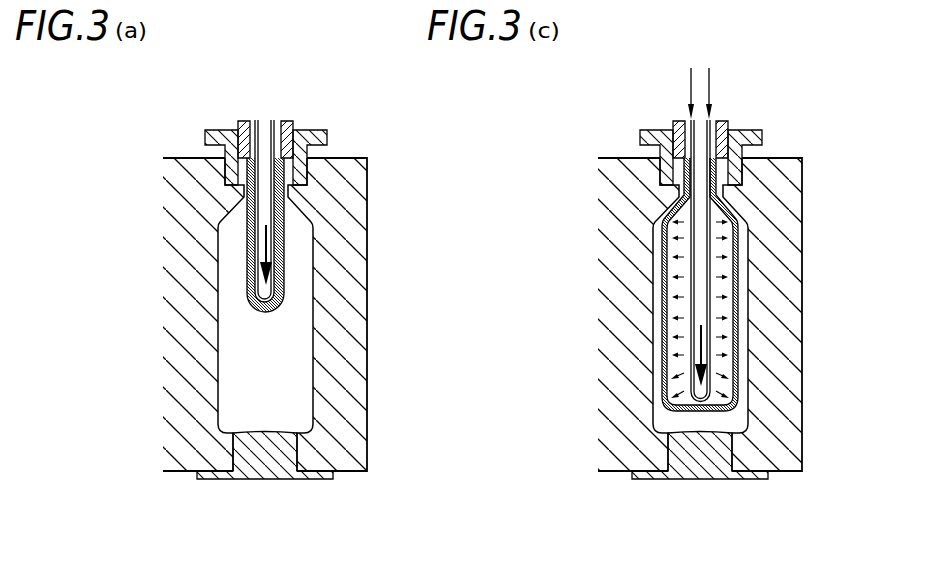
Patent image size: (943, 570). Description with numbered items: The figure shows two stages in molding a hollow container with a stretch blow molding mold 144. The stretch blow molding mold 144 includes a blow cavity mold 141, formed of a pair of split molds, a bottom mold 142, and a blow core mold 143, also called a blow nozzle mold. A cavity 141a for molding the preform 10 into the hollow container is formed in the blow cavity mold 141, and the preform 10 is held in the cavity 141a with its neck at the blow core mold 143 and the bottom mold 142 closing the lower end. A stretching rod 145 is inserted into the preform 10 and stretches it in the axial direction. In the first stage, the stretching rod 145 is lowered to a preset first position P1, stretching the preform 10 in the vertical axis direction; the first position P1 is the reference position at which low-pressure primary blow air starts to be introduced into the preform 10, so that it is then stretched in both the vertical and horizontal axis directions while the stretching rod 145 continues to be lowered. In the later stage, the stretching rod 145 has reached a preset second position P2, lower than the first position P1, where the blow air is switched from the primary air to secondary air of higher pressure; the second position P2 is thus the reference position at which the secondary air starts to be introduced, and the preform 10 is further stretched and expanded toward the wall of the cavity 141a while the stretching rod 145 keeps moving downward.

In FIG. 3A, the preform 10 is at (247, 236).
In FIG. 3C, the preform 10 is at (662, 236).
In FIG. 3A, the blow cavity mold 141 is at (348, 222).
In FIG. 3C, the blow cavity mold 141 is at (783, 222).
In FIG. 3A, the cavity 141a is at (277, 406).
In FIG. 3C, the cavity 141a is at (740, 352).
In FIG. 3A, the bottom mold 142 is at (270, 465).
In FIG. 3C, the bottom mold 142 is at (705, 465).
In FIG. 3A, the blow core mold 143 is at (287, 120).
In FIG. 3C, the blow core mold 143 is at (718, 120).
In FIG. 3A, the stretch blow molding mold 144 is at (416, 114).
In FIG. 3C, the stretch blow molding mold 144 is at (850, 114).
In FIG. 3A, the stretching rod 145 is at (274, 238).
In FIG. 3C, the stretching rod 145 is at (705, 237).
In FIG. 3A, the first position P1 is at (290, 306).
In FIG. 3C, the second position P2 is at (715, 403).